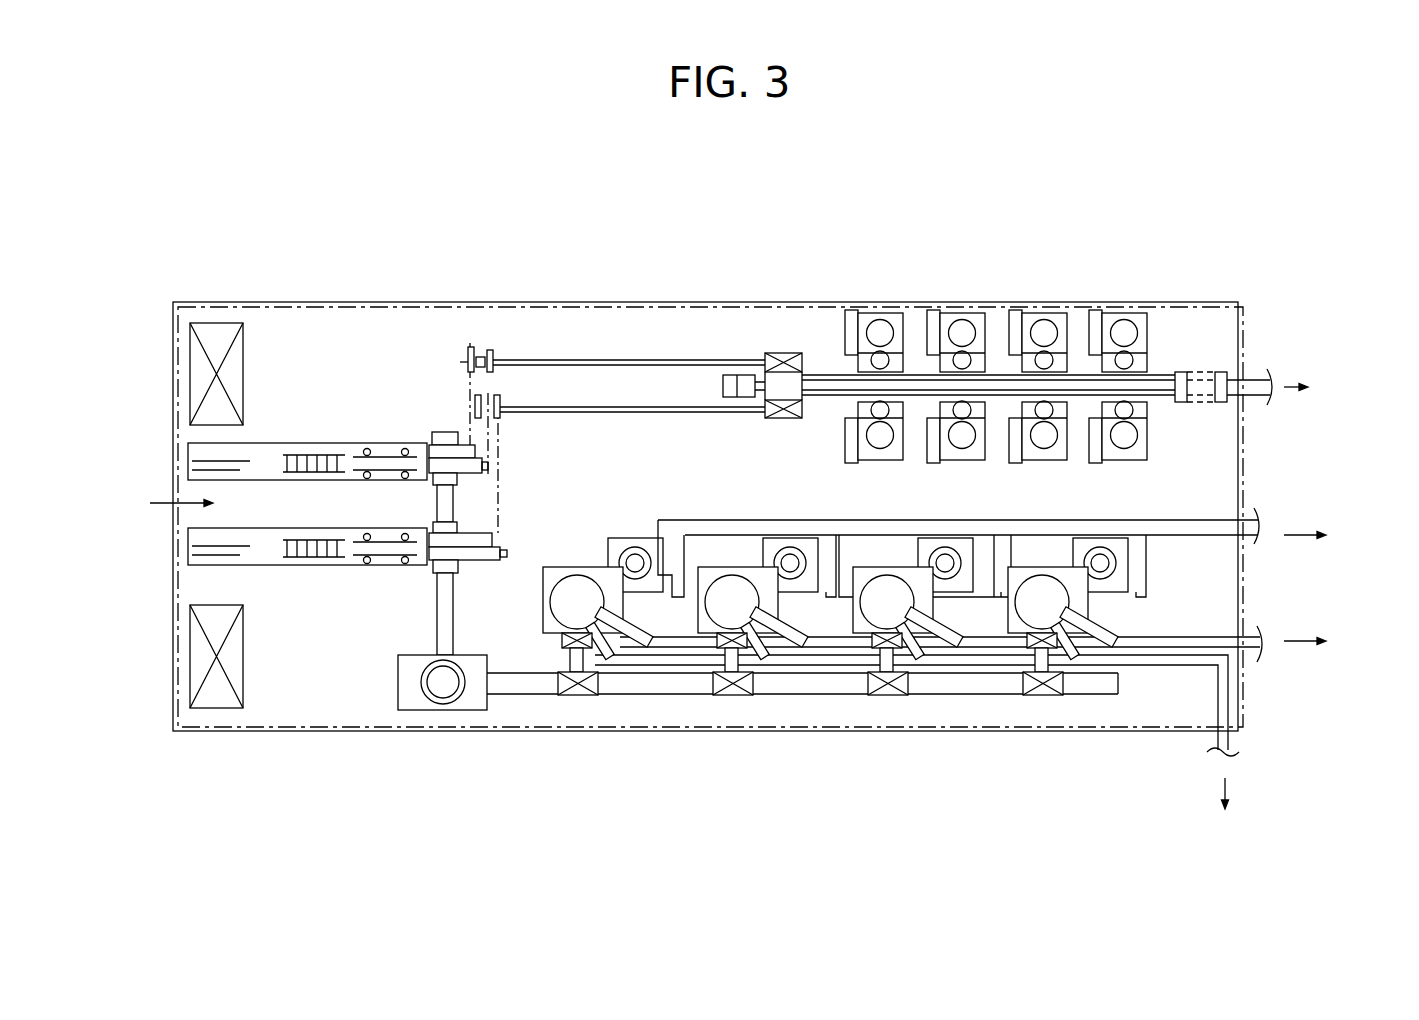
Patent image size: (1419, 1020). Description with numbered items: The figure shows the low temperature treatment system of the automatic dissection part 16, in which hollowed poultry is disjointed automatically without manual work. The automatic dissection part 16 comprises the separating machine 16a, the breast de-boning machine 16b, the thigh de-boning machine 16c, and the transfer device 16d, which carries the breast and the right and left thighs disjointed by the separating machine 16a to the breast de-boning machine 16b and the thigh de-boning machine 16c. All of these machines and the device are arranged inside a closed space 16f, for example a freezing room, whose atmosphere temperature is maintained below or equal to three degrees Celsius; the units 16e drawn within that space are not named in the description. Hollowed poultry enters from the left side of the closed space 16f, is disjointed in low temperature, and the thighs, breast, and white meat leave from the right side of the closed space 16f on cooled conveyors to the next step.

The automatic dissection part 16 is at (722, 289).
The separating machine 16a is at (284, 432).
The breast de-boning machine 16b is at (629, 505).
The thigh de-boning machine 16c is at (658, 360).
The transfer device 16d is at (464, 712).
The cooling units 16e is at (217, 330).
The closed space 16f is at (494, 304).